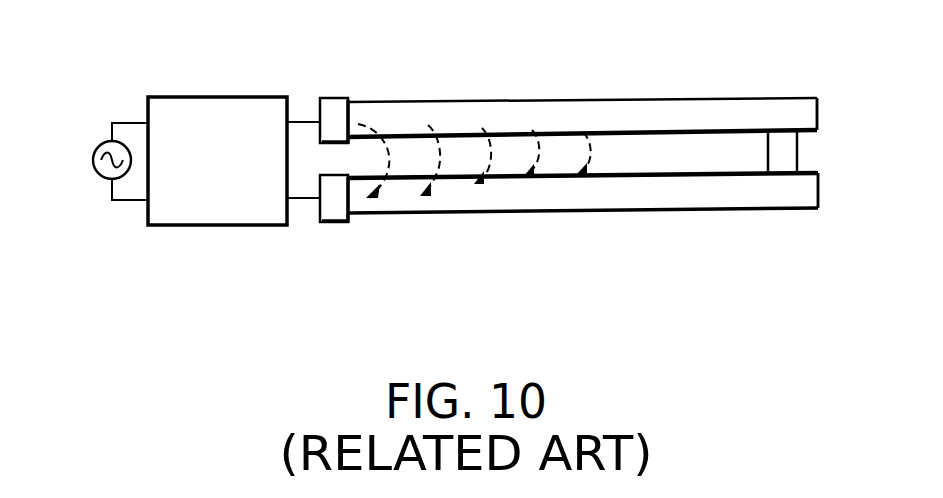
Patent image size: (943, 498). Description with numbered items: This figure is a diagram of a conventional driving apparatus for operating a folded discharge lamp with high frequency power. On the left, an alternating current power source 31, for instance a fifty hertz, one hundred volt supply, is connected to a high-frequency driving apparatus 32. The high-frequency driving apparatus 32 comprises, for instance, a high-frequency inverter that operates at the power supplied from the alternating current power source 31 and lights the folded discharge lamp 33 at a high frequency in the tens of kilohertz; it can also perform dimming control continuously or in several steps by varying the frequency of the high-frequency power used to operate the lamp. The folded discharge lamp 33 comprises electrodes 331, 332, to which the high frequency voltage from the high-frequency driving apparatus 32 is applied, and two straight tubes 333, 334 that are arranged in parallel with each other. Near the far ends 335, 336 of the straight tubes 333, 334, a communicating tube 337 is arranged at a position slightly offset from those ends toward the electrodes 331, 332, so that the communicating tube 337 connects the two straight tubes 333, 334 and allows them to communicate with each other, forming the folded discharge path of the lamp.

The alternating current power source 31 is at (96, 142).
The high-frequency driving apparatus 32 is at (217, 96).
The folded discharge lamp 33 is at (602, 152).
The electrode 331 is at (360, 103).
The electrode 332 is at (351, 205).
The straight tube 333 is at (490, 108).
The straight tube 334 is at (497, 203).
The end of straight tube 335 is at (819, 103).
The end of straight tube 336 is at (819, 189).
The communicating tube 337 is at (786, 150).